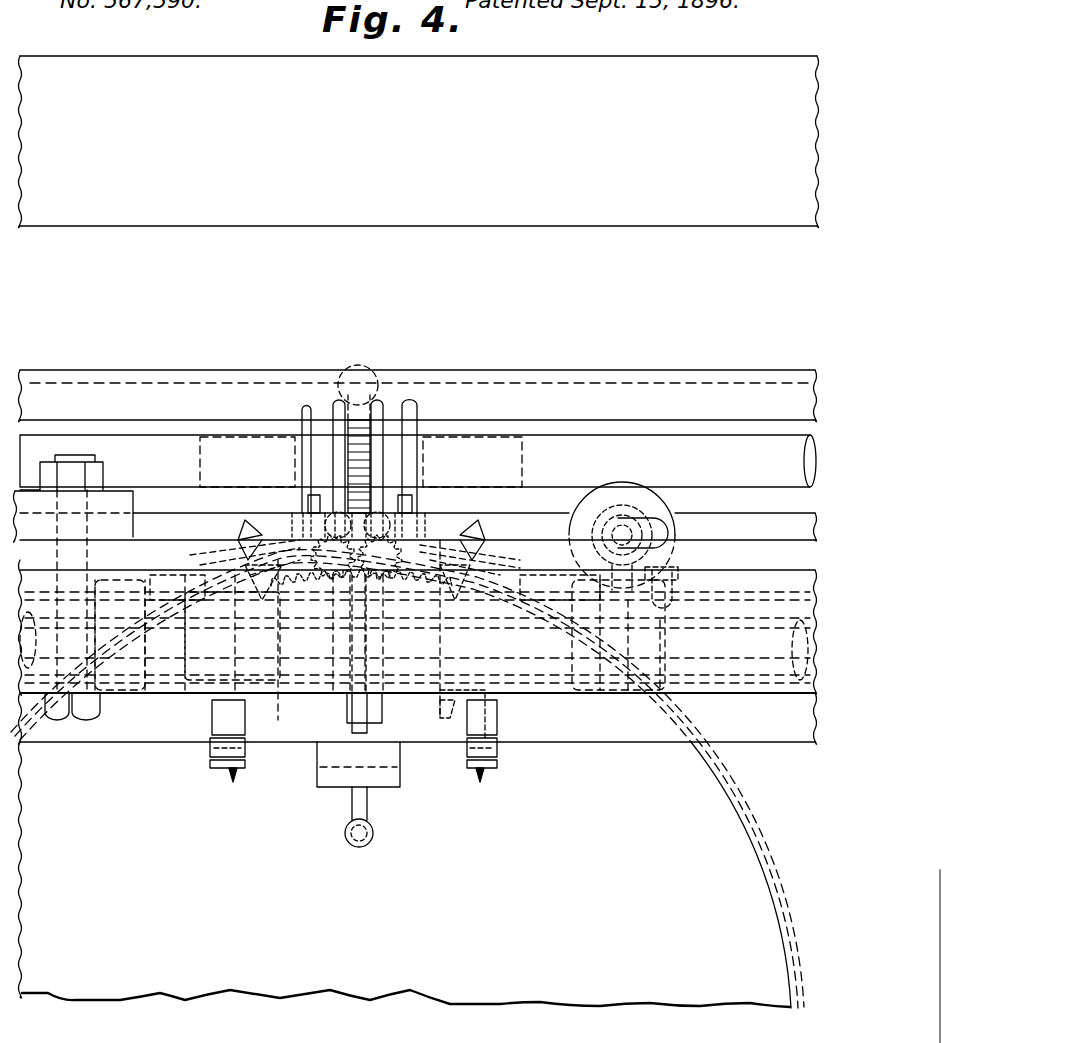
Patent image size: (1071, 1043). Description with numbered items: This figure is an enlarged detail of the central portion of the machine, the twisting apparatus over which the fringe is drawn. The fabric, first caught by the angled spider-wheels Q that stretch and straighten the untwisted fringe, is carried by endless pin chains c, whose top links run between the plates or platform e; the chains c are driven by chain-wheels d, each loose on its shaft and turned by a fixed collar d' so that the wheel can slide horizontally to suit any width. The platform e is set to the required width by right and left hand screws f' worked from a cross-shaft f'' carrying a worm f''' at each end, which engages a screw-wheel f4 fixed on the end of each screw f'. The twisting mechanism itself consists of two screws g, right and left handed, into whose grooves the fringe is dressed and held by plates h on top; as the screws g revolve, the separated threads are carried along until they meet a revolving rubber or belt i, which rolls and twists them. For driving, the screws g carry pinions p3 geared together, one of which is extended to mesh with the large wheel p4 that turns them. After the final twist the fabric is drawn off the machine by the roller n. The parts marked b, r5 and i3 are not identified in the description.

The roller n is at (419, 142).
The guide bar b is at (418, 375).
The bracket block r5 is at (86, 490).
The platform plates e is at (205, 553).
The plates h is at (313, 513).
The revolving rubber or belt i is at (362, 440).
The screw stem i3 is at (374, 445).
The spider-wheels Q is at (250, 530).
The screws g is at (356, 557).
The pinions p3 is at (362, 575).
The cross-shaft f'' is at (622, 518).
The worm f''' is at (667, 502).
The screw-wheels f4 is at (640, 560).
The right and left hand screws f' is at (684, 587).
The chain-wheels d is at (346, 734).
The chains c is at (373, 767).
The collar d' is at (353, 660).
The large wheel p4 is at (407, 779).